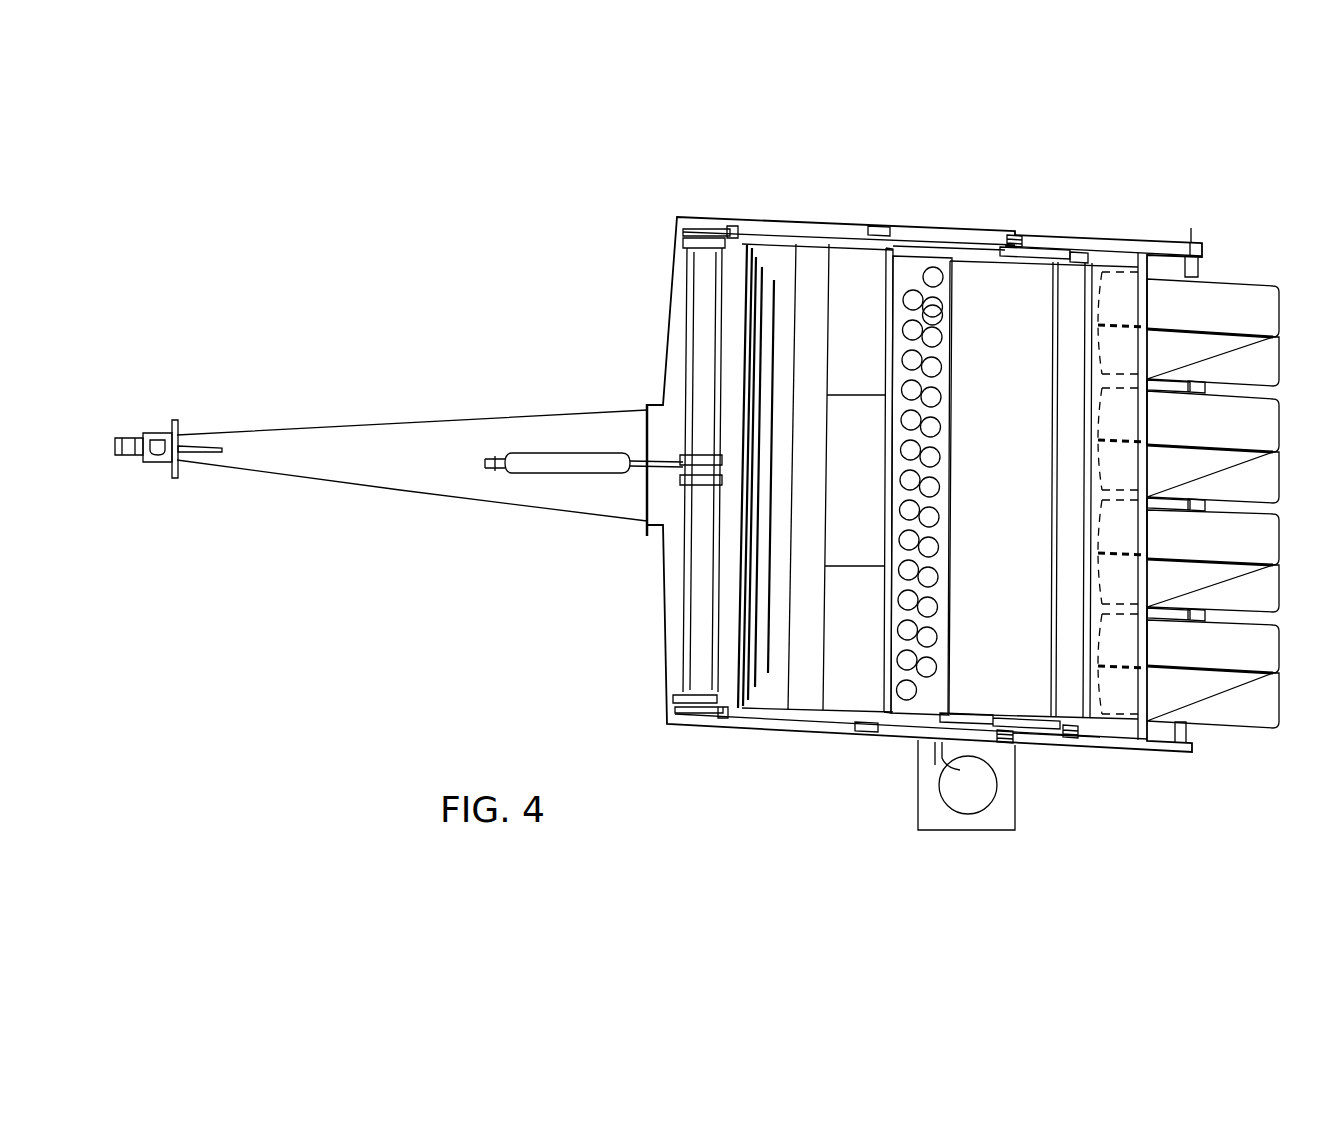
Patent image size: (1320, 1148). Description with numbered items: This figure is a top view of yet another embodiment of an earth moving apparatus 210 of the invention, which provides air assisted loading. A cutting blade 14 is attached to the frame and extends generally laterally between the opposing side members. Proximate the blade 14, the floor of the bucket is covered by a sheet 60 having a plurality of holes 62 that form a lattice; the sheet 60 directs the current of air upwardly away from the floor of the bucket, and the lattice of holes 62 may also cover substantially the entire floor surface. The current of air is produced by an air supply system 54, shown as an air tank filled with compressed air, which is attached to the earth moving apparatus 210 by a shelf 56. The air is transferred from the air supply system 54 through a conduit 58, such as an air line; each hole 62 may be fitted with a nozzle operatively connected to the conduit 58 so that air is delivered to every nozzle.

The earth moving apparatus 210 is at (598, 238).
The cutting blade 14 is at (850, 270).
The sheet 60 is at (908, 268).
The hole 62 is at (940, 315).
The air supply system 54 is at (960, 805).
The shelf 56 is at (1000, 826).
The conduit 58 is at (935, 766).